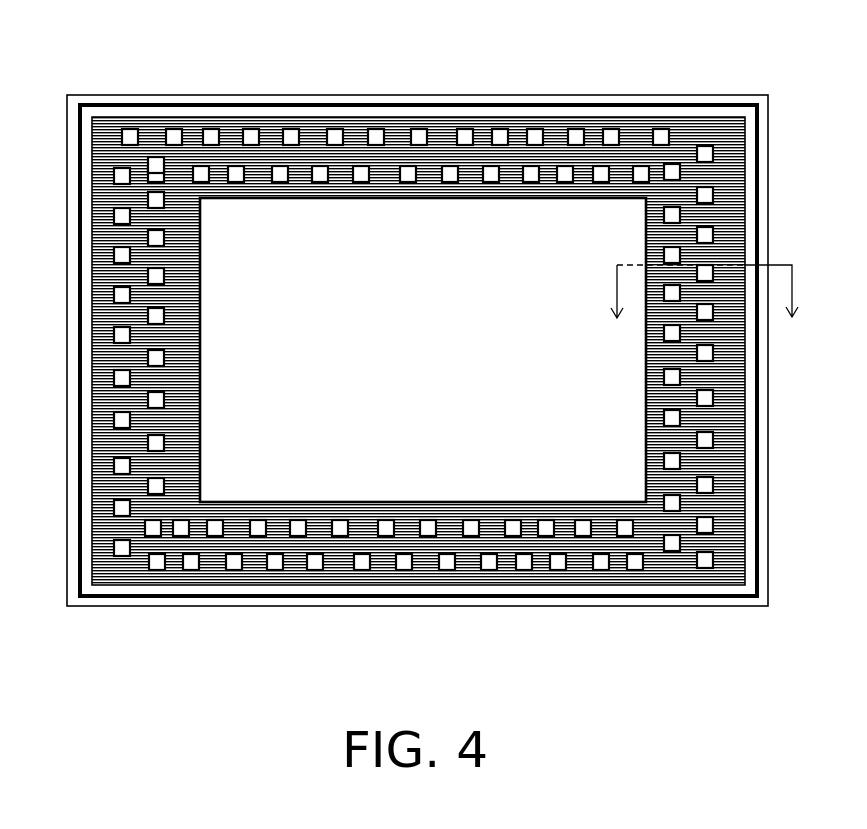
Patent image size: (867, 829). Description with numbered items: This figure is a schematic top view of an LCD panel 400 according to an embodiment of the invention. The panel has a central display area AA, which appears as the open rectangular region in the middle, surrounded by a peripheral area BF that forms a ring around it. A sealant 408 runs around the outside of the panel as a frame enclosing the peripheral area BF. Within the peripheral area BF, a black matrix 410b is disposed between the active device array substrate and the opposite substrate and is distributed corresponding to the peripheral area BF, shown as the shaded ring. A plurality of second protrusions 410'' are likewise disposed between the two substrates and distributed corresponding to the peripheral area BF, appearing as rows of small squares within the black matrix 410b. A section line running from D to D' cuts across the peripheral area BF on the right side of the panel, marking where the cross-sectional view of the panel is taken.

The LCD panel 400 is at (772, 671).
The sealant 408 is at (480, 105).
The black matrix 410b is at (730, 135).
The second protrusions 410'' is at (487, 349).
The display area AA is at (285, 235).
The peripheral area BF is at (403, 142).
The section line D is at (676, 310).
The section line D' is at (775, 310).